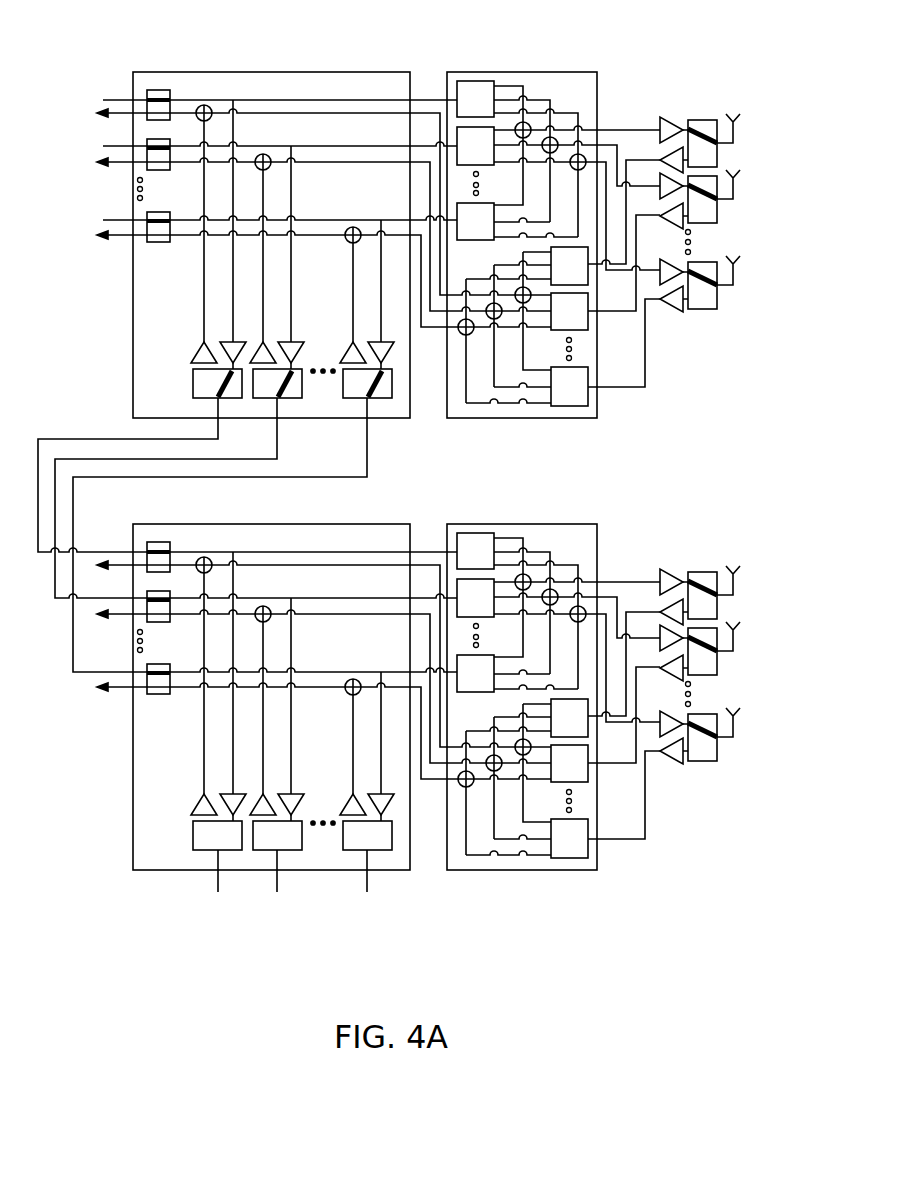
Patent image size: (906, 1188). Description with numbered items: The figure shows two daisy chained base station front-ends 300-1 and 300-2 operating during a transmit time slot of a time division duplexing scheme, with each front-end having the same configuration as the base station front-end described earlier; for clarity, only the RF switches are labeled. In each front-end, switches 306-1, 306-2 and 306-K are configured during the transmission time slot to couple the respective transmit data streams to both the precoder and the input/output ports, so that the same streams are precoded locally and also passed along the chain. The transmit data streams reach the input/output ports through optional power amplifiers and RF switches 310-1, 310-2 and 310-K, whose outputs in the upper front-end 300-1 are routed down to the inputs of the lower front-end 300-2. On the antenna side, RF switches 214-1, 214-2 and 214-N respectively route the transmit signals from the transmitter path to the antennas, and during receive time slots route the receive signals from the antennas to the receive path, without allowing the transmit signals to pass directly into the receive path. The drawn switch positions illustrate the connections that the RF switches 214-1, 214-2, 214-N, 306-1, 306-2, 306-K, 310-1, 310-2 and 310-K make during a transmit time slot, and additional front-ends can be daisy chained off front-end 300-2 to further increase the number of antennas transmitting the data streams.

The BS front-end 300-1 is at (583, 464).
The BS front-end 300-2 is at (583, 916).
The switch 306-1 is at (185, 88).
The switch 306-2 is at (185, 137).
The switch 306-K is at (185, 210).
The RF switch 310-1 is at (206, 381).
The RF switch 310-2 is at (266, 381).
The RF switch 310-K is at (356, 381).
The RF switch 214-1 is at (710, 158).
The RF switch 214-2 is at (710, 214).
The RF switch 214-N is at (710, 300).